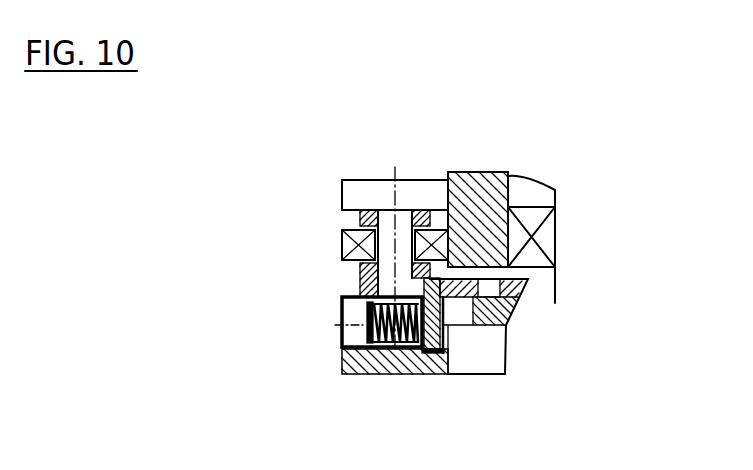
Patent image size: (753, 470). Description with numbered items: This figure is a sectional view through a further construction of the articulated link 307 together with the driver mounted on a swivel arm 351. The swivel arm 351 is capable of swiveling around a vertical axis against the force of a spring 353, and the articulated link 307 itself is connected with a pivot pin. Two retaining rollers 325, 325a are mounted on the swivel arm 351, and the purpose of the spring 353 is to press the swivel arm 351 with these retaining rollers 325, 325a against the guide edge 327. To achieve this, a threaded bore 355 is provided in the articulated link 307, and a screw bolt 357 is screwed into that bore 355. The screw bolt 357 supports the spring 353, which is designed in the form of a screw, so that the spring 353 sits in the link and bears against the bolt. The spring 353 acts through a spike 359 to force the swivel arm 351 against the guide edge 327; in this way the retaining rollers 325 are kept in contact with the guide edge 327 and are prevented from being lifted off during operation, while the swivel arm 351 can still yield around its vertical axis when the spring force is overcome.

The articulated link 307 is at (365, 363).
The retaining roller 325 is at (345, 243).
The retaining roller 325a is at (373, 188).
The guide edge 327 is at (453, 220).
The swivel arm 351 is at (360, 222).
The spring 353 is at (395, 348).
The threaded bore 355 is at (390, 300).
The screw bolt 357 is at (357, 328).
The spike 359 is at (437, 330).